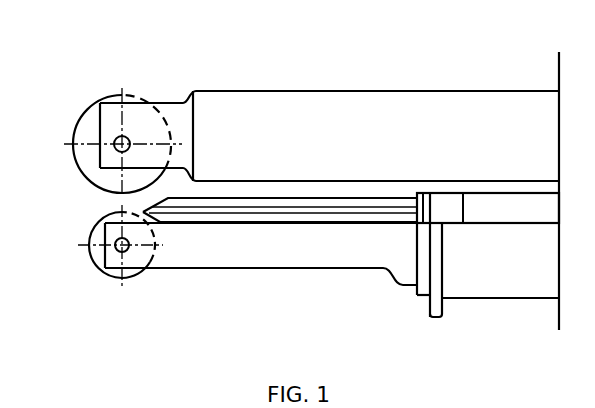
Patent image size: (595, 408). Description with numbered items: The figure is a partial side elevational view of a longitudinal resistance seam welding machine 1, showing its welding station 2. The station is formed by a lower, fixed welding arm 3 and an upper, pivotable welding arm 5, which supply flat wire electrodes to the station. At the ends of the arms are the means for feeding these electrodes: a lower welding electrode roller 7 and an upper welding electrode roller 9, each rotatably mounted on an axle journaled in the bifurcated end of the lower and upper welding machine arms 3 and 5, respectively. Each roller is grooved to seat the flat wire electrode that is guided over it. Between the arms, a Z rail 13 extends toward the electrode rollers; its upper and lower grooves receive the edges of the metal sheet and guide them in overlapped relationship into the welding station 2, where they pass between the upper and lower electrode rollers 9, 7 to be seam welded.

The resistance welding machine 1 is at (490, 59).
The welding station 2 is at (98, 204).
The lower fixed welding arm 3 is at (222, 250).
The upper pivotable welding arm 5 is at (328, 115).
The lower welding electrode roller 7 is at (103, 240).
The upper welding electrode roller 9 is at (90, 130).
The Z rail 13 is at (277, 210).